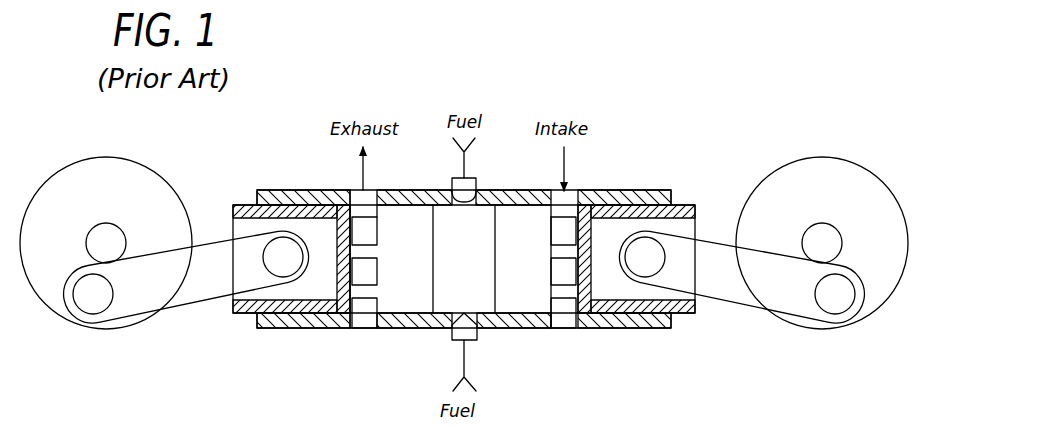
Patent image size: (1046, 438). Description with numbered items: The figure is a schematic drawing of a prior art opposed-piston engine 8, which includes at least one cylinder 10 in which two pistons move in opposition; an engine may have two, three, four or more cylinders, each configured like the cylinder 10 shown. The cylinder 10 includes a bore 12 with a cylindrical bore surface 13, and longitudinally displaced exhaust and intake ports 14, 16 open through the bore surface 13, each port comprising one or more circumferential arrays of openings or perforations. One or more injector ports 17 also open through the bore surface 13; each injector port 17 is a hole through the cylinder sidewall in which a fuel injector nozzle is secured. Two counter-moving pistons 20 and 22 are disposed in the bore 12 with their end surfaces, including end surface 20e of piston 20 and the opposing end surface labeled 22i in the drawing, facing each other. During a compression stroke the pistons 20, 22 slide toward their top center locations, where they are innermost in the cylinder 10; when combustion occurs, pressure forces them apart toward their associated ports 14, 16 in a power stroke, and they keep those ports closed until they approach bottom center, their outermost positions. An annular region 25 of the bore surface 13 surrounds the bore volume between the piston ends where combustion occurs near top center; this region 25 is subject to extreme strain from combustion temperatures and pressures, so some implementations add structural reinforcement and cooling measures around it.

The opposed-piston engine 8 is at (658, 135).
The cylinder 10 is at (313, 345).
The bore 12 is at (515, 293).
The bore surface 13 is at (422, 316).
The exhaust port 14 is at (363, 322).
The intake port 16 is at (563, 318).
The injector port 17 is at (470, 333).
The piston 20 is at (310, 287).
The end surface of piston 20e is at (357, 270).
The piston 22 is at (603, 285).
The intake piston end 22i is at (551, 273).
The annular region 25 is at (480, 242).